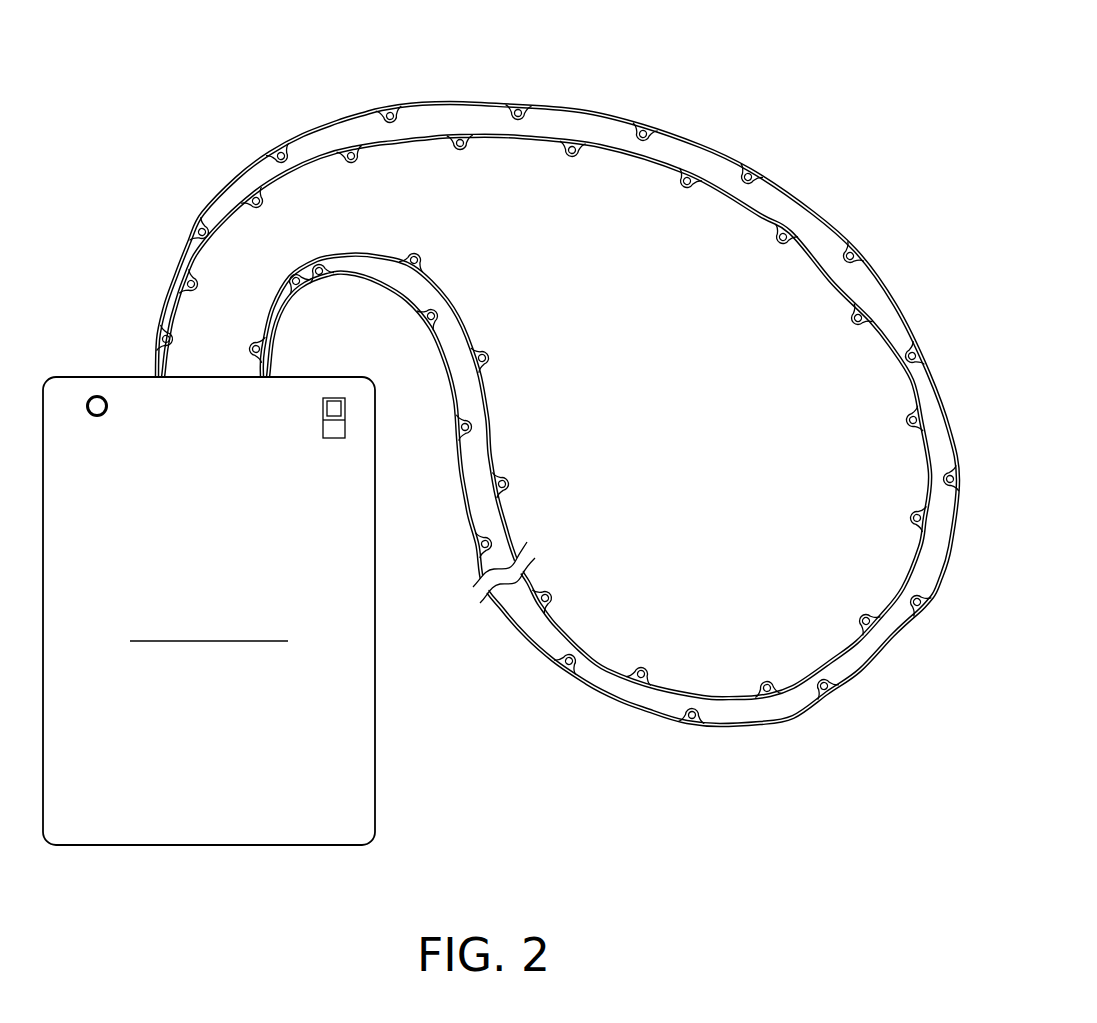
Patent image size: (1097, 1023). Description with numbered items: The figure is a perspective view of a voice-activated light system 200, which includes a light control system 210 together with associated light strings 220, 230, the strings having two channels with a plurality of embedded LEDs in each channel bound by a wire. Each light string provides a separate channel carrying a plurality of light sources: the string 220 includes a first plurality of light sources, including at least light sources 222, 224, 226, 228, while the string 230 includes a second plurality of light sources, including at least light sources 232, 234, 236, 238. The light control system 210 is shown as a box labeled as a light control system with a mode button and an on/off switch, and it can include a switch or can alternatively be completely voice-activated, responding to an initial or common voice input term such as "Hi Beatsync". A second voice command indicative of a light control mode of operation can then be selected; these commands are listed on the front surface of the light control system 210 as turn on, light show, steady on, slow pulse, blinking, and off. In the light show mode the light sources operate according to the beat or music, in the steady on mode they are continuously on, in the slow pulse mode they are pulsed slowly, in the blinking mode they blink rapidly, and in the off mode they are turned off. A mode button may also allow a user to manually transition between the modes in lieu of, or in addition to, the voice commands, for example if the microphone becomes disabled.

The voice-activated light system 200 is at (501, 452).
The light control system 210 is at (377, 790).
The light string 220 is at (815, 212).
The light source 222 is at (158, 336).
The light source 224 is at (200, 228).
The light source 226 is at (278, 150).
The light source 228 is at (390, 110).
The light string 230 is at (760, 212).
The light source 232 is at (196, 289).
The light source 234 is at (262, 207).
The light source 236 is at (357, 161).
The light source 238 is at (466, 148).